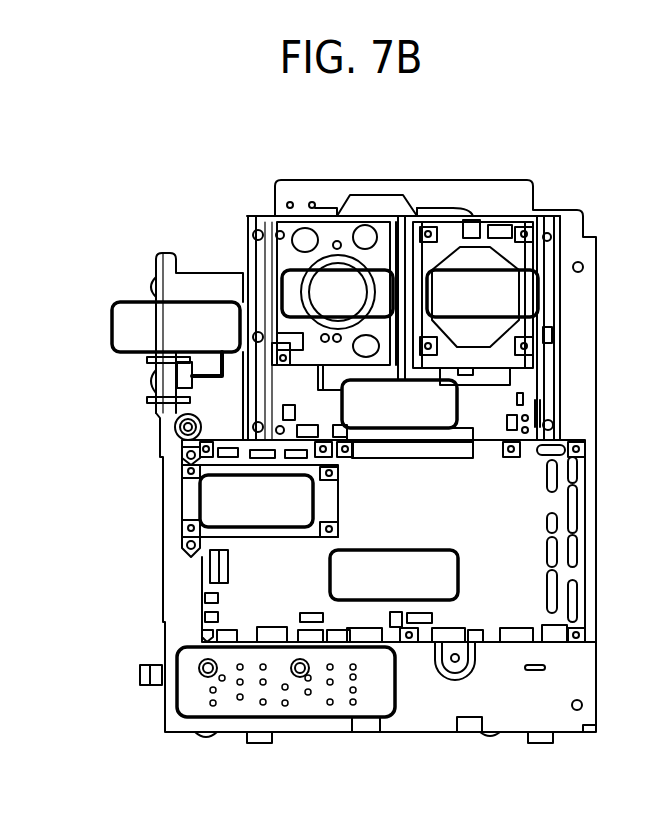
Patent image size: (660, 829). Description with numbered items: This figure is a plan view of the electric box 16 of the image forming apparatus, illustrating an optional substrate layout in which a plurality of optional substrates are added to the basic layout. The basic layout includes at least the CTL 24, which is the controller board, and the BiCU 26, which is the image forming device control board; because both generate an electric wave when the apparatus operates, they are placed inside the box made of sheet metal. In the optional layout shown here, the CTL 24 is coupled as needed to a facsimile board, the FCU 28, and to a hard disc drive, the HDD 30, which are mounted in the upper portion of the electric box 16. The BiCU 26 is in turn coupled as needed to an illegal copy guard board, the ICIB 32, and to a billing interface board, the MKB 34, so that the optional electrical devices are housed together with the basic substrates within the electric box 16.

The electric box 16 is at (596, 358).
The CTL 24 is at (340, 392).
The BiCU 26 is at (420, 549).
The facsimile board (FCU) 28 is at (280, 293).
The hard disc drive (HDD) 30 is at (540, 293).
The illegal copy guard board (ICIB) 32 is at (200, 497).
The billing interface board (MKB) 34 is at (112, 330).